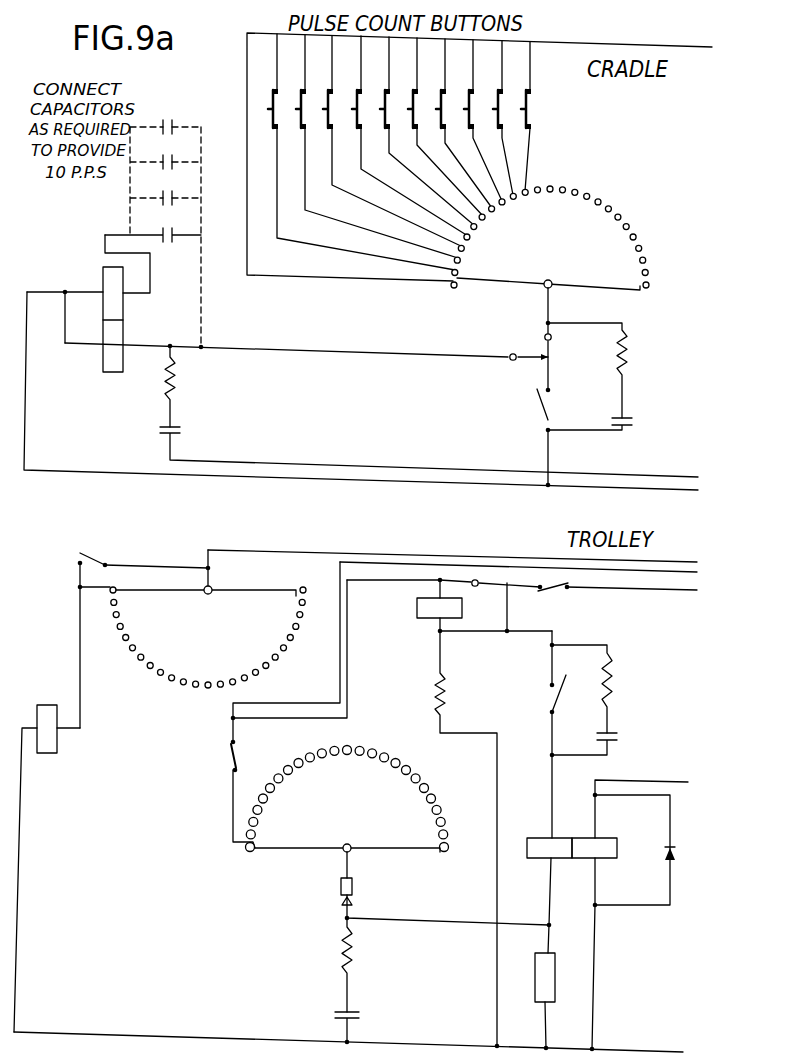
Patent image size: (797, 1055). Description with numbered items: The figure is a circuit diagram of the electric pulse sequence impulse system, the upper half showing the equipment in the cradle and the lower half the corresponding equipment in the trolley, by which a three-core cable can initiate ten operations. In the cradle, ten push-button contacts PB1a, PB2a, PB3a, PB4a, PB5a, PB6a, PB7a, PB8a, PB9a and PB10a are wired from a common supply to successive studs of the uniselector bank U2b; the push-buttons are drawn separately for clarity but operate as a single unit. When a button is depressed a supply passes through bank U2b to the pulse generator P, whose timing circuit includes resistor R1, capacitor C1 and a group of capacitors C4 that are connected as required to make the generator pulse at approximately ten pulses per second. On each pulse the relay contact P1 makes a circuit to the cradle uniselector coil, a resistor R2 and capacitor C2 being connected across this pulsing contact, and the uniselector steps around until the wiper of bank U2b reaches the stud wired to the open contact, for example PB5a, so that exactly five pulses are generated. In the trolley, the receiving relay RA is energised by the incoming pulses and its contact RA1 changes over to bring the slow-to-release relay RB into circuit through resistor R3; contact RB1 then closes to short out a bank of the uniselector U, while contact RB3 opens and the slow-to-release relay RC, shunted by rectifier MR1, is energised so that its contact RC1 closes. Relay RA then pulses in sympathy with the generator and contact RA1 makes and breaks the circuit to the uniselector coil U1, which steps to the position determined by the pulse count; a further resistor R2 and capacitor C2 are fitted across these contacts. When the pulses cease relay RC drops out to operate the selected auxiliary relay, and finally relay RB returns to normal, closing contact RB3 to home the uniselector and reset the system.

The push-button contact PB1a is at (354, 152).
The push-button contact PB2a is at (369, 146).
The push-button contact PB3a is at (385, 141).
The push-button contact PB4a is at (402, 136).
The push-button contact PB5a is at (420, 131).
The push-button contact PB6a is at (438, 127).
The push-button contact PB7a is at (456, 123).
The push-button contact PB8a is at (475, 120).
The push-button contact PB9a is at (495, 118).
The push-button contact PB10a is at (521, 113).
The uniselector bank U2b is at (550, 238).
The relay contact P1 is at (315, 387).
The pulse generator P is at (116, 390).
The resistor R1 is at (283, 678).
The capacitor C1 is at (429, 730).
The resistor R2 is at (611, 528).
The capacitor C2 is at (607, 580).
The capacitor C4 is at (154, 221).
The relay contact RB1 is at (136, 629).
The uniselector bank U is at (208, 637).
The relay RA is at (56, 685).
The relay contact RB3 is at (242, 788).
The relay RB is at (402, 610).
The relay contact RA1 is at (513, 595).
The resistor R3 is at (467, 839).
The relay contact RC1 is at (547, 734).
The uniselector coil U1 is at (390, 898).
The relay RC is at (645, 847).
The rectifier MR1 is at (673, 860).